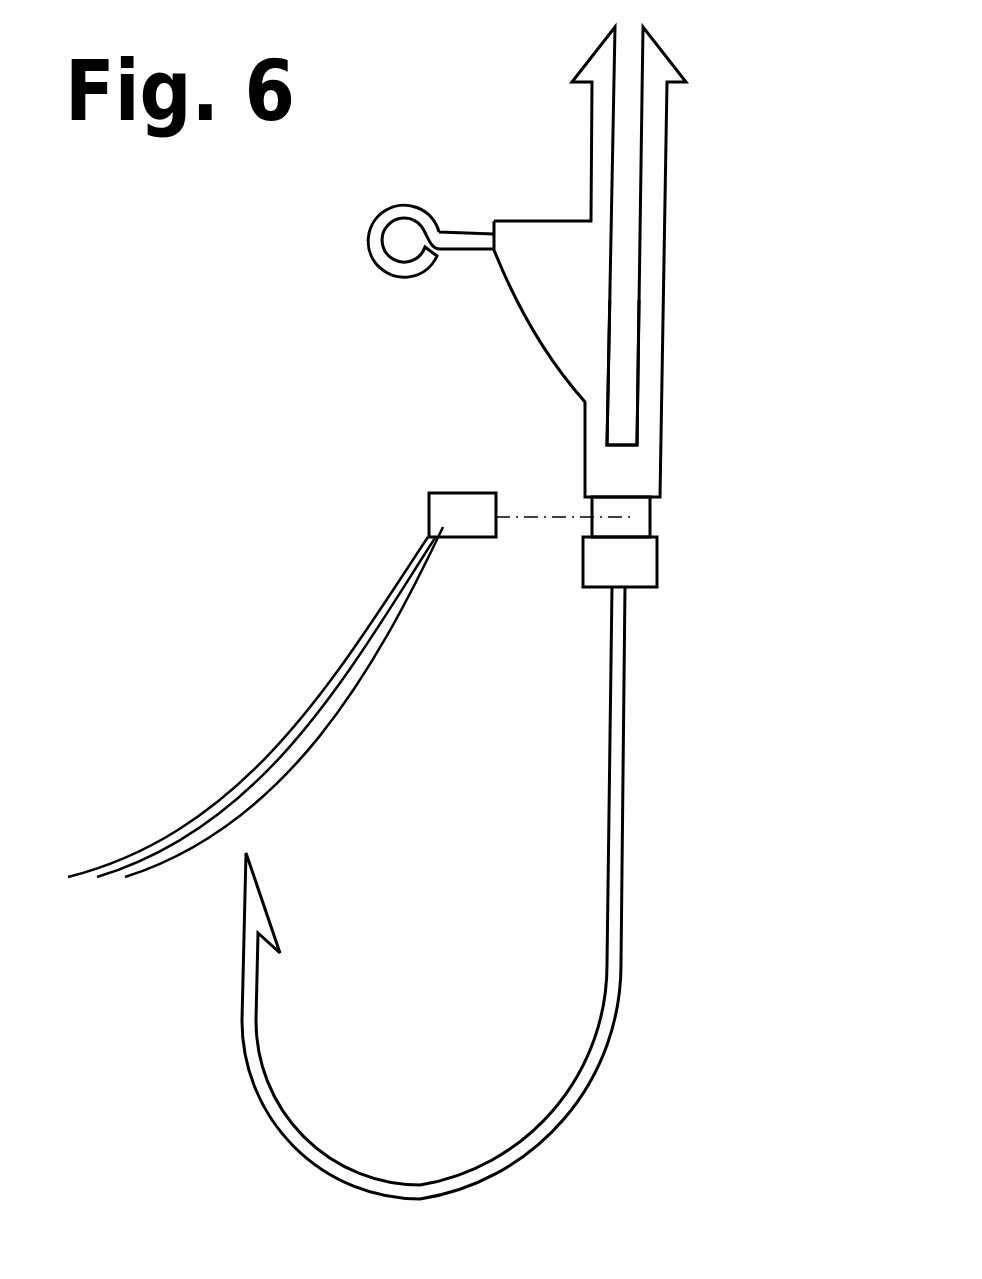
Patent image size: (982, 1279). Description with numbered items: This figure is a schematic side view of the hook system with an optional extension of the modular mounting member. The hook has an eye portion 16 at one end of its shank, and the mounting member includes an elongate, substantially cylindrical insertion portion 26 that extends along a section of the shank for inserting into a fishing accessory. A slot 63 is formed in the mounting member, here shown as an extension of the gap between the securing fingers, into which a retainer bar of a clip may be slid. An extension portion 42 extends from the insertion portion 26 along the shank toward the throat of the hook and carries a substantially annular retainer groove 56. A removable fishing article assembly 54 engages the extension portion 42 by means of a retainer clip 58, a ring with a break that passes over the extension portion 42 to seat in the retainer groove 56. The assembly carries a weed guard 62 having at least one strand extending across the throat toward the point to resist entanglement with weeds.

The eye portion 16 is at (467, 240).
The insertion portion 26 is at (650, 277).
The slot 63 is at (620, 323).
The retainer groove 56 is at (638, 508).
The extension portion 42 is at (635, 562).
The removable fishing article assembly 54 is at (351, 645).
The retainer clip 58 is at (472, 518).
The weed guard 62 is at (315, 722).